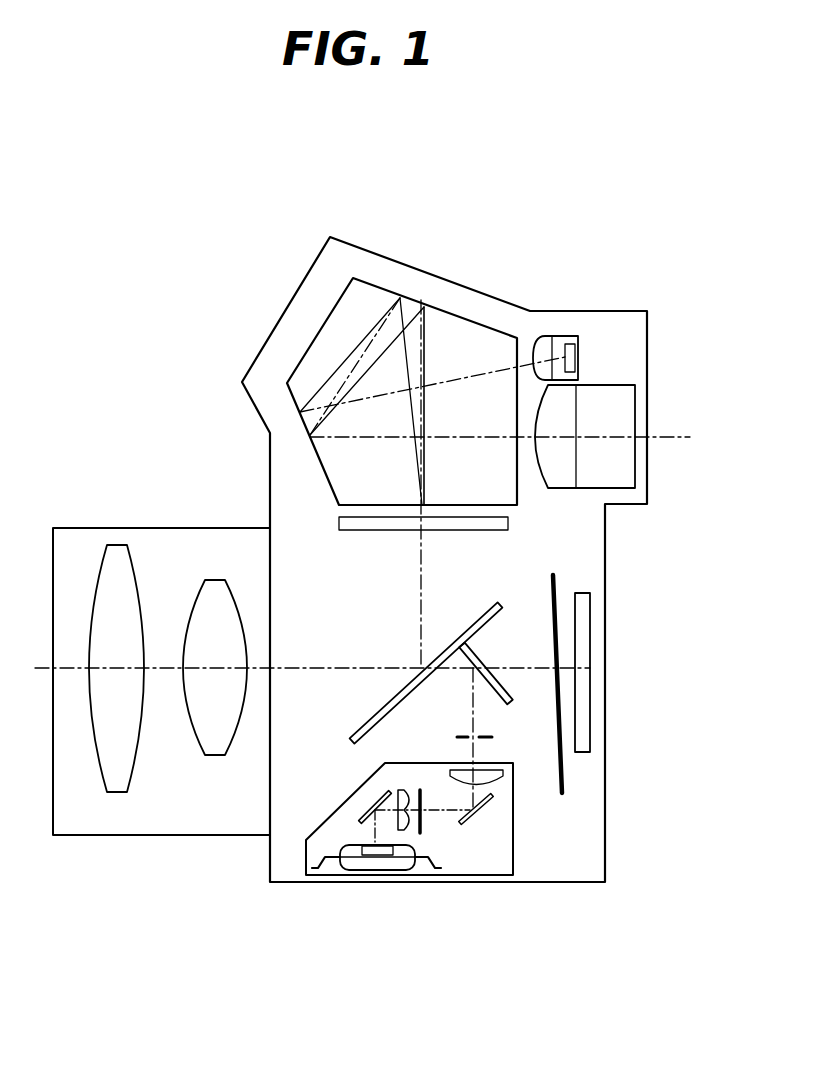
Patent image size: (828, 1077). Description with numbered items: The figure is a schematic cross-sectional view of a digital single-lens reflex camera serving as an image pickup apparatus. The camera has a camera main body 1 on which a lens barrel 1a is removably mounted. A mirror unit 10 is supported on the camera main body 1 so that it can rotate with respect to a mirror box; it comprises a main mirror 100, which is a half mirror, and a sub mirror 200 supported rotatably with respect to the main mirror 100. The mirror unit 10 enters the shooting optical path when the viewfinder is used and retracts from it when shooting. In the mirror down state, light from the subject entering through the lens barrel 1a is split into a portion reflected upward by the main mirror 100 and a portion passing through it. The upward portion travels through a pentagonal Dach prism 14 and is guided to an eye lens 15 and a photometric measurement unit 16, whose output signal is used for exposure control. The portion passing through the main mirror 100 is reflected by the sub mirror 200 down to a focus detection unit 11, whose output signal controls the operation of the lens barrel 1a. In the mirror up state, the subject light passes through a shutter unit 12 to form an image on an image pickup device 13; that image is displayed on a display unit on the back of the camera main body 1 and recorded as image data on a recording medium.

The camera main body 1 is at (605, 843).
The lens barrel 1a is at (147, 528).
The mirror unit 10 is at (451, 672).
The main mirror 100 is at (475, 620).
The sub mirror 200 is at (497, 677).
The focus detection unit 11 is at (462, 857).
The shutter unit 12 is at (558, 585).
The image pickup device 13 is at (590, 640).
The pentagonal Dach prism 14 is at (365, 305).
The eye lens 15 is at (563, 415).
The photometric measurement unit 16 is at (562, 340).